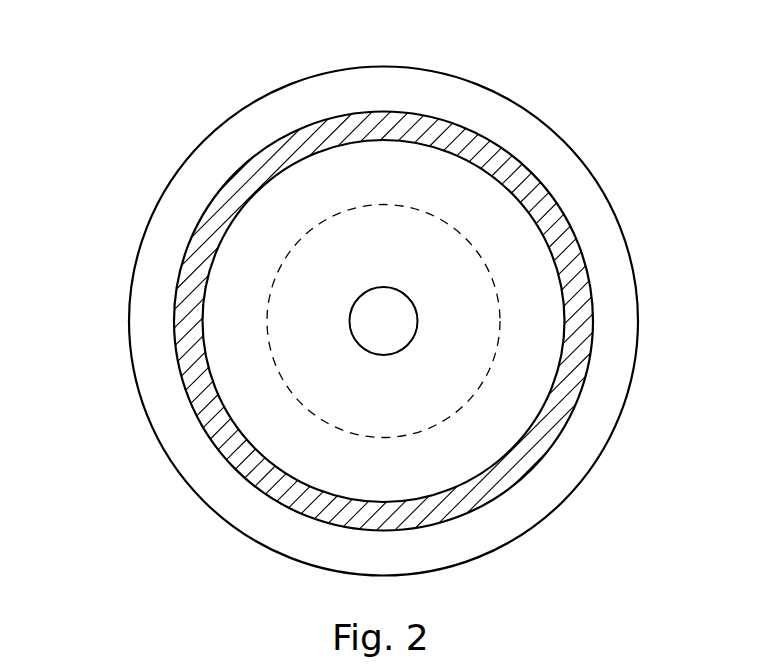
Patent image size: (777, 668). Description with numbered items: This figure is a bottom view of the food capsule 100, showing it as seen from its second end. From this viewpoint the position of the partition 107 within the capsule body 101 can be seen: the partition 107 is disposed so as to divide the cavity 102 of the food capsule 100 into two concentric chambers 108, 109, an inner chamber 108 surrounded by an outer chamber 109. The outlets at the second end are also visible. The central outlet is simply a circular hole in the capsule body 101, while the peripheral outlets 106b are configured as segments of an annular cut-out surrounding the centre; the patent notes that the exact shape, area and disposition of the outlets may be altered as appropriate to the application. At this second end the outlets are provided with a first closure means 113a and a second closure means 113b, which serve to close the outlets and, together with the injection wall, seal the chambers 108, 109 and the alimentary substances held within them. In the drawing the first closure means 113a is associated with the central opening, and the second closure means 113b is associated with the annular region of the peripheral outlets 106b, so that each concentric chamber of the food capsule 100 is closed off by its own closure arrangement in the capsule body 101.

The food capsule 100 is at (593, 147).
The capsule body 101 is at (639, 313).
The cavity 102 is at (402, 158).
The peripheral outlets 106b is at (349, 320).
The partition 107 is at (489, 255).
The chamber 108 is at (310, 385).
The chamber 109 is at (280, 533).
The first closure means 113a is at (364, 339).
The second closure means 113b is at (193, 270).